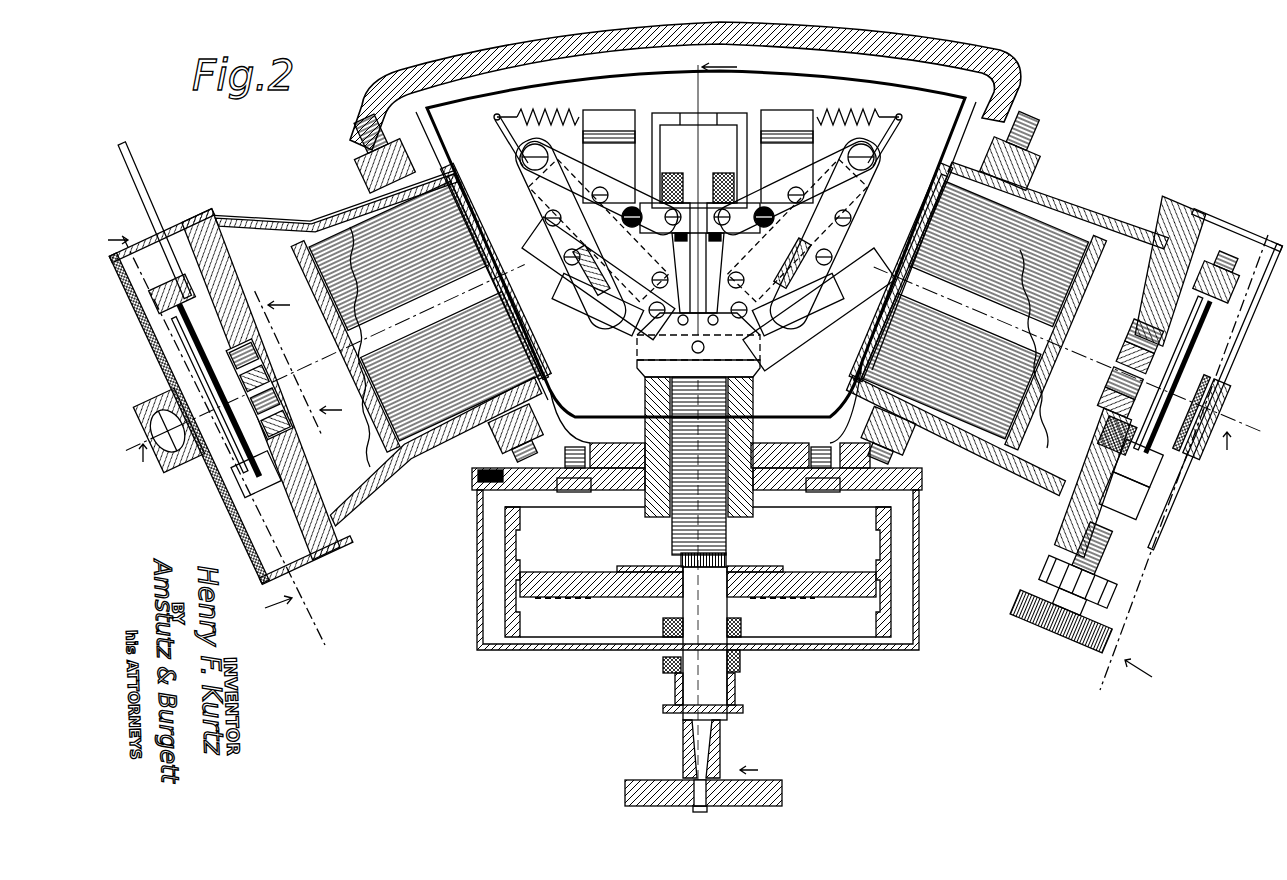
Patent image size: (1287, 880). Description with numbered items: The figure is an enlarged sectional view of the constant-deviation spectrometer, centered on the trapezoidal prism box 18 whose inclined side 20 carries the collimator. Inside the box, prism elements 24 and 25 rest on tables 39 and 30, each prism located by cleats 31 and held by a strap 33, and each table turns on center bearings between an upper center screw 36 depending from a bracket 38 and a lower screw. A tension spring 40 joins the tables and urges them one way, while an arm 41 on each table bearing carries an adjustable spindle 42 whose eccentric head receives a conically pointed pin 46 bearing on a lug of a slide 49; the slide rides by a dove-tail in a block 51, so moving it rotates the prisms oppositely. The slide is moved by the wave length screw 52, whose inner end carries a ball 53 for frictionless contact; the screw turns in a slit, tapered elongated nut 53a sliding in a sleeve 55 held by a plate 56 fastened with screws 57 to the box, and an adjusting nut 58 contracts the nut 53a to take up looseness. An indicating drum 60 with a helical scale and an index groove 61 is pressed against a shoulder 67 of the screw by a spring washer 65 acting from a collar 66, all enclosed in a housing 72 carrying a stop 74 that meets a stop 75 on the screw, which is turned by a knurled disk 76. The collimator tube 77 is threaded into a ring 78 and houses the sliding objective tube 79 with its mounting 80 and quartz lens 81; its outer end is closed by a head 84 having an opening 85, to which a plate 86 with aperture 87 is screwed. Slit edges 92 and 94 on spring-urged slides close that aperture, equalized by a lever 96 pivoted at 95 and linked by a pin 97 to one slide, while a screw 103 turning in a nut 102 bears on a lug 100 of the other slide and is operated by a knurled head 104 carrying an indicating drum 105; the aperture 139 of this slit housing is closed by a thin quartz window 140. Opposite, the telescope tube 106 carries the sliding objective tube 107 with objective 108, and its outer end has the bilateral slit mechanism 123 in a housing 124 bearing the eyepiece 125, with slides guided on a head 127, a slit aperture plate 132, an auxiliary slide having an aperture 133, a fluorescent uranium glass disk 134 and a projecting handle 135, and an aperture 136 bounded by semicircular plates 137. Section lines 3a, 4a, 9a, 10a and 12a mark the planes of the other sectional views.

The prism box 18 is at (966, 60).
The inclined side 20 is at (1017, 136).
The prism element 24 is at (812, 310).
The prism element 25 is at (568, 288).
The table 30 is at (598, 318).
The abutments or cleats 31 is at (694, 240).
The strap 33 is at (535, 185).
The upper center screw 36 is at (620, 195).
The bracket 38 is at (620, 130).
The table 39 is at (795, 335).
The tension spring 40 is at (560, 112).
The arm 41 is at (722, 175).
The spindle 42 is at (672, 175).
The conically pointed pin 46 is at (698, 269).
The slide 49 is at (668, 112).
The block 51 is at (745, 113).
The wave length screw 52 is at (730, 525).
The ball 53 is at (698, 346).
The elongated nut 53a is at (660, 500).
The sleeve 55 is at (647, 400).
The plate 56 is at (490, 490).
The screws 57 is at (572, 495).
The adjusting nut 58 is at (637, 362).
The indicating drum 60 is at (505, 595).
The groove 61 is at (515, 555).
The spring washer 65 is at (741, 627).
The collar 66 is at (663, 627).
The shoulder 67 is at (672, 560).
The housing 72 is at (520, 650).
The stop 74 is at (742, 660).
The stop 75 is at (745, 690).
The knurled disk 76 is at (782, 785).
The collimator tube 77 is at (1082, 205).
The ring 78 is at (1042, 158).
The objective tube 79 is at (1033, 207).
The mounting 80 is at (928, 190).
The quartz lens 81 is at (925, 226).
The head 84 is at (1170, 226).
The opening 85 is at (1130, 343).
The plate 86 is at (1130, 400).
The aperture 87 is at (1128, 385).
The slit edge 92 is at (1120, 420).
The slit edge 94 is at (1152, 320).
The pivot 95 is at (1236, 302).
The lever 96 is at (1212, 272).
The pin 97 is at (1228, 350).
The lug 100 is at (1152, 470).
The nut 102 is at (1146, 490).
The screw 103 is at (1115, 540).
The knurled operating head 104 is at (1045, 622).
The indicating drum 105 is at (1040, 572).
The telescope tube 106 is at (307, 218).
The objective tube 107 is at (312, 200).
The objective 108 is at (500, 200).
The bilateral slit mechanism 123 is at (212, 215).
The housing 124 is at (175, 340).
The eyepiece 125 is at (165, 455).
The head 127 is at (315, 520).
The slit aperture plate 132 is at (292, 470).
The aperture 133 is at (240, 480).
The disk of uranium glass 134 is at (170, 380).
The handle 135 is at (152, 176).
The aperture 136 is at (265, 358).
The semicircular plates 137 is at (270, 395).
The aperture 139 is at (1218, 375).
The quartz window 140 is at (1222, 395).
The section line 3a is at (689, 449).
The section line 4a is at (736, 408).
The section line 9a is at (1180, 454).
The section line 10a is at (220, 426).
The section line 12a is at (298, 359).